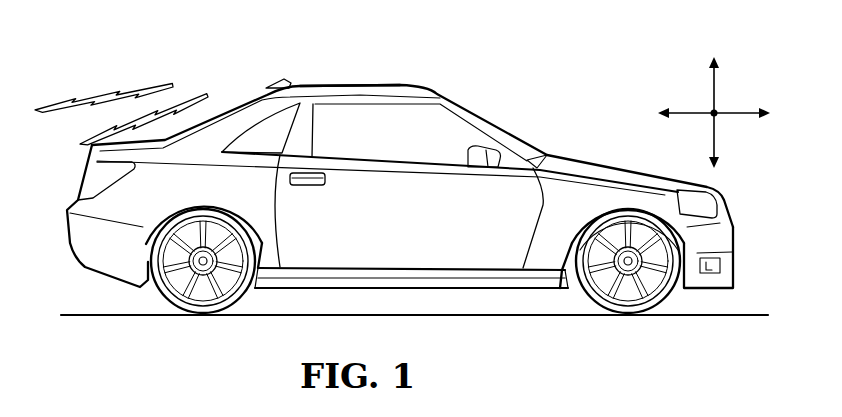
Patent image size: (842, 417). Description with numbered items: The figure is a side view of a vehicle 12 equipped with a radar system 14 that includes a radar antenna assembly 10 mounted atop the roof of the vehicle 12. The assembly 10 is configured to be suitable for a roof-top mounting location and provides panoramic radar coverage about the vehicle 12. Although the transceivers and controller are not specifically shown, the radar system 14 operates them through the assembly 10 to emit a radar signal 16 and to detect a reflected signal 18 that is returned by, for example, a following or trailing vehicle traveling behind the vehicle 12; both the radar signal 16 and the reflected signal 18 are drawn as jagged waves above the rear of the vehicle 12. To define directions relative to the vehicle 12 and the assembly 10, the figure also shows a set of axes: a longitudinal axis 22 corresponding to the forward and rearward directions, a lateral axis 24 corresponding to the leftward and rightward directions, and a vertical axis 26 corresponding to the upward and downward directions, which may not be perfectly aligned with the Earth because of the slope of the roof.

The radar antenna assembly 10 is at (272, 83).
The vehicle 12 is at (397, 87).
The radar system 14 is at (531, 104).
The radar signal 16 is at (193, 98).
The reflected signal 18 is at (67, 98).
The longitudinal axis 22 is at (688, 112).
The lateral axis 24 is at (718, 117).
The vertical axis 26 is at (715, 96).